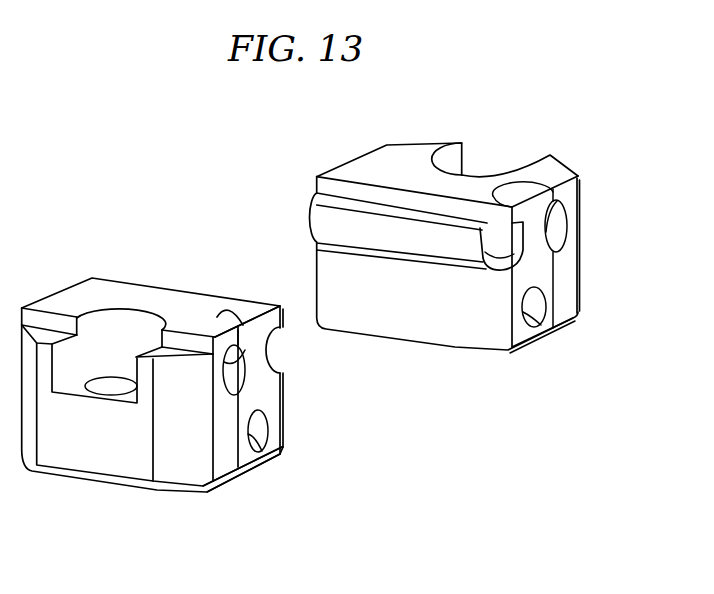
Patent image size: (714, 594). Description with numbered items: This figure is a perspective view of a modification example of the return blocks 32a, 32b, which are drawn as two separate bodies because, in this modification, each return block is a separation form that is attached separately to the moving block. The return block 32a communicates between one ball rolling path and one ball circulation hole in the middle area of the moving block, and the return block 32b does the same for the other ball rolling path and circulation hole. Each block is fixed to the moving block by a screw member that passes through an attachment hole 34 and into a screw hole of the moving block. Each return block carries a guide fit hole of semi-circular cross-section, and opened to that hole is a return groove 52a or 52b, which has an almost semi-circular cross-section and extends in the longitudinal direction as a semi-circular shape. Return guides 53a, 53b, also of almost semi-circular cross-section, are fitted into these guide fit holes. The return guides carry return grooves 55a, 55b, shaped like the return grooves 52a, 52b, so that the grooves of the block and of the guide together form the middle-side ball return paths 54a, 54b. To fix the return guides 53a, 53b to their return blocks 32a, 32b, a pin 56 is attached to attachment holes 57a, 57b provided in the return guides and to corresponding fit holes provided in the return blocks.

The return block 32a is at (77, 283).
The return block 32b is at (401, 163).
The attachment hole 34 is at (120, 383).
The return groove 52a is at (248, 372).
The return groove 52b is at (560, 205).
The return guide 53a is at (276, 453).
The return guide 53b is at (546, 326).
The middle-side ball return path 54a is at (235, 382).
The middle-side ball return path 54b is at (552, 230).
The return groove 55a is at (272, 361).
The return groove 55b is at (512, 257).
The pin 56 is at (258, 426).
The attachment hole 57a is at (270, 452).
The attachment hole 57b is at (540, 334).